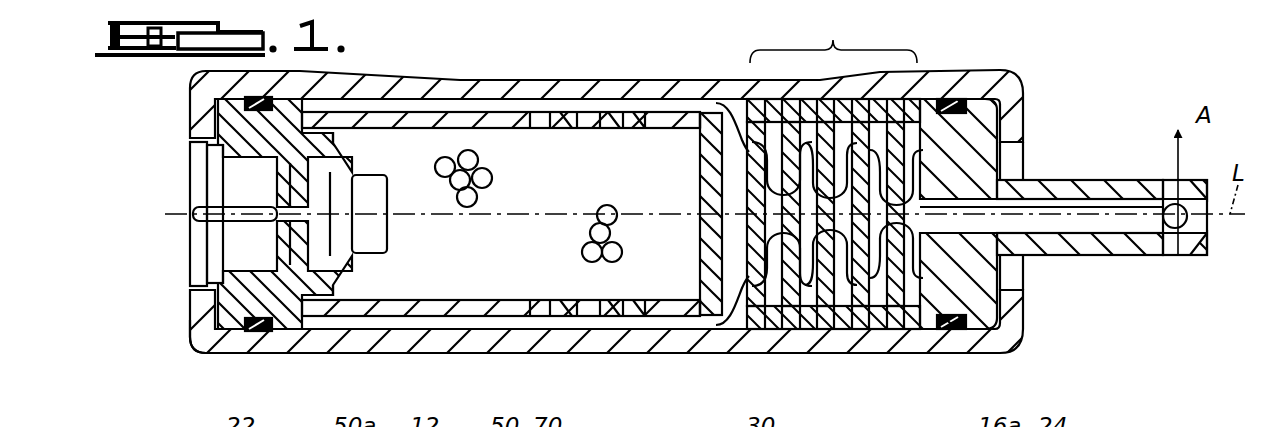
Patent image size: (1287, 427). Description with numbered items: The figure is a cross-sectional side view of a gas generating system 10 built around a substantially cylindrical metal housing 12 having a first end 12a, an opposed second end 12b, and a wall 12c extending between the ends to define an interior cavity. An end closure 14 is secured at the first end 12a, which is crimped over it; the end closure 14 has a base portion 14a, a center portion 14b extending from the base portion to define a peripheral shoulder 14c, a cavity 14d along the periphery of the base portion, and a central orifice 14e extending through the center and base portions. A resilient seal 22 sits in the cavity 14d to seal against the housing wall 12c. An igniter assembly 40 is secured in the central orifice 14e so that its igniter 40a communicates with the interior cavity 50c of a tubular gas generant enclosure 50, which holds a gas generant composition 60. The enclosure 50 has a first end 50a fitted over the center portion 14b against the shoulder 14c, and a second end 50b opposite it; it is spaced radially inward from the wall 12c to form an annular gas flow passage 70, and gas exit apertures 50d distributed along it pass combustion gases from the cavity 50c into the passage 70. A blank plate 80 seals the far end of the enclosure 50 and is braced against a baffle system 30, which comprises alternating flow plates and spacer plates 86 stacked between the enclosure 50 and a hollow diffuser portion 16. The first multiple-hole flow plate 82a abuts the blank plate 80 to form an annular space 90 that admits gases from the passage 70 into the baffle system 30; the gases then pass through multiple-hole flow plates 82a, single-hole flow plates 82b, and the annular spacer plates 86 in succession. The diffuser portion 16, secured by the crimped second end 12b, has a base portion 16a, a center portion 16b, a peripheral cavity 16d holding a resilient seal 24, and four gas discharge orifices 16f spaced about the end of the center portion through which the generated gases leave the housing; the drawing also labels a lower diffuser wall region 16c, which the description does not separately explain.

The gas generating system 10 is at (1100, 94).
The housing 12 is at (400, 352).
The first end 12a is at (213, 340).
The second end 12b is at (1026, 333).
The wall 12c is at (648, 343).
The end closure 14 is at (238, 124).
The base portion 14a is at (233, 323).
The center portion 14b is at (320, 137).
The peripheral shoulder 14c is at (307, 313).
The cavity 14d is at (233, 323).
The central orifice 14e is at (240, 288).
The diffuser portion 16 is at (1210, 178).
The base portion 16a is at (942, 132).
The center portion 16b is at (1118, 180).
The piston rod lower wall 16c is at (1125, 236).
The cavity 16d is at (967, 321).
The gas discharge orifices 16f is at (1177, 253).
The resilient seal 22 is at (250, 100).
The resilient seal 24 is at (953, 98).
The baffle system 30 is at (826, 41).
The igniter assembly 40 is at (297, 188).
The igniter 40a is at (388, 237).
The gas generant enclosure 50 is at (453, 118).
The first end 50a is at (350, 312).
The second end 50b is at (687, 118).
The interior cavity 50c is at (681, 290).
The gas exit apertures 50d is at (620, 124).
The gas generant composition 60 is at (600, 243).
The annular gas flow passage 70 is at (519, 104).
The blank plate 80 is at (698, 181).
The multiple-hole flow plate 82a is at (746, 233).
The single-hole flow plate 82b is at (786, 263).
The spacer plates 86 is at (832, 334).
The annular space 90 is at (755, 334).